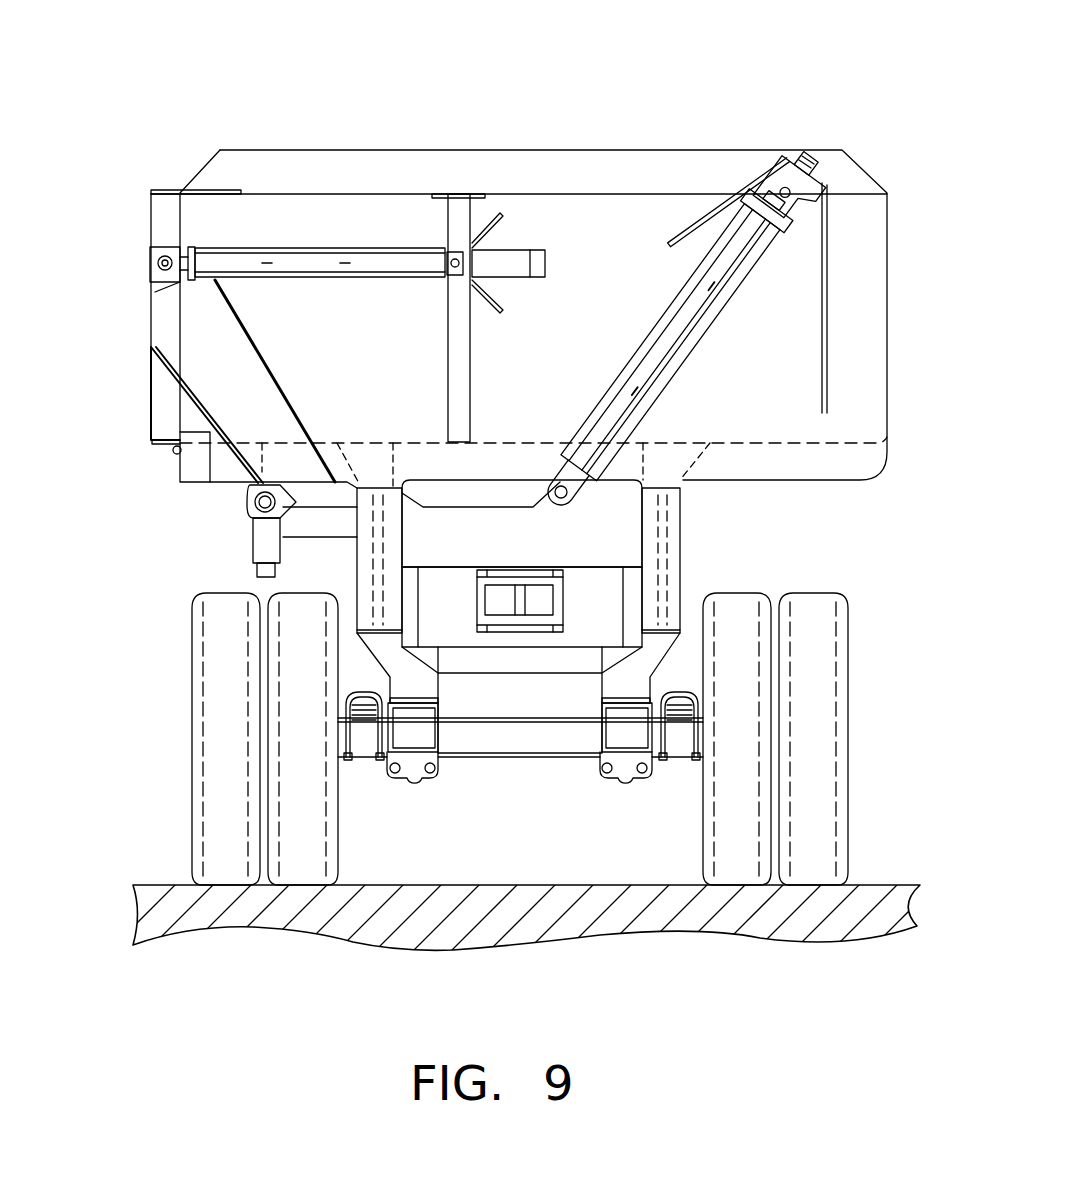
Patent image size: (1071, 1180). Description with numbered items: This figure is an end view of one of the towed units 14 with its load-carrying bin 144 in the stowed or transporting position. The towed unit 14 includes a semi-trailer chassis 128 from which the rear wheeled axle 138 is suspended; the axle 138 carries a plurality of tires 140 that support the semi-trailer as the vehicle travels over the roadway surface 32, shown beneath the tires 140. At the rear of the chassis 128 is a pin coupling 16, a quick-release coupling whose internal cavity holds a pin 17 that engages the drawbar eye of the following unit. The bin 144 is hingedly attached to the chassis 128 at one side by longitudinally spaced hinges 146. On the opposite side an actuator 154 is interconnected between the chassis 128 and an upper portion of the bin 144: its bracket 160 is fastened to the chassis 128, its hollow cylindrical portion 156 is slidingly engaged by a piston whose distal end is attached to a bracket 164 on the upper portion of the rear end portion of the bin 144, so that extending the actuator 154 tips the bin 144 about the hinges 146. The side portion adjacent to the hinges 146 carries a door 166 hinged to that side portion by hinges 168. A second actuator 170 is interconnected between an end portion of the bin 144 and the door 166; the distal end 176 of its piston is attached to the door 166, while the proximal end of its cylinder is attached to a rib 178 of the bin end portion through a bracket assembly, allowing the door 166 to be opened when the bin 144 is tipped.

The towed unit 14 is at (551, 73).
The load-carrying bin 144 is at (627, 150).
The bracket 164 is at (784, 159).
The distal end of piston 176 is at (152, 266).
The actuator 170 is at (307, 280).
The rib 178 is at (471, 351).
The cylindrical portion 156 is at (680, 286).
The actuator 154 is at (697, 361).
The door 166 is at (152, 385).
The hinges 168 is at (171, 454).
The hinges 146 is at (247, 500).
The chassis 128 is at (343, 538).
The bracket 160 is at (560, 504).
The pin 17 is at (527, 598).
The pin coupling 16 is at (473, 624).
The tires 140 is at (812, 590).
The rear wheeled axle 138 is at (507, 757).
The roadway surface 32 is at (428, 885).